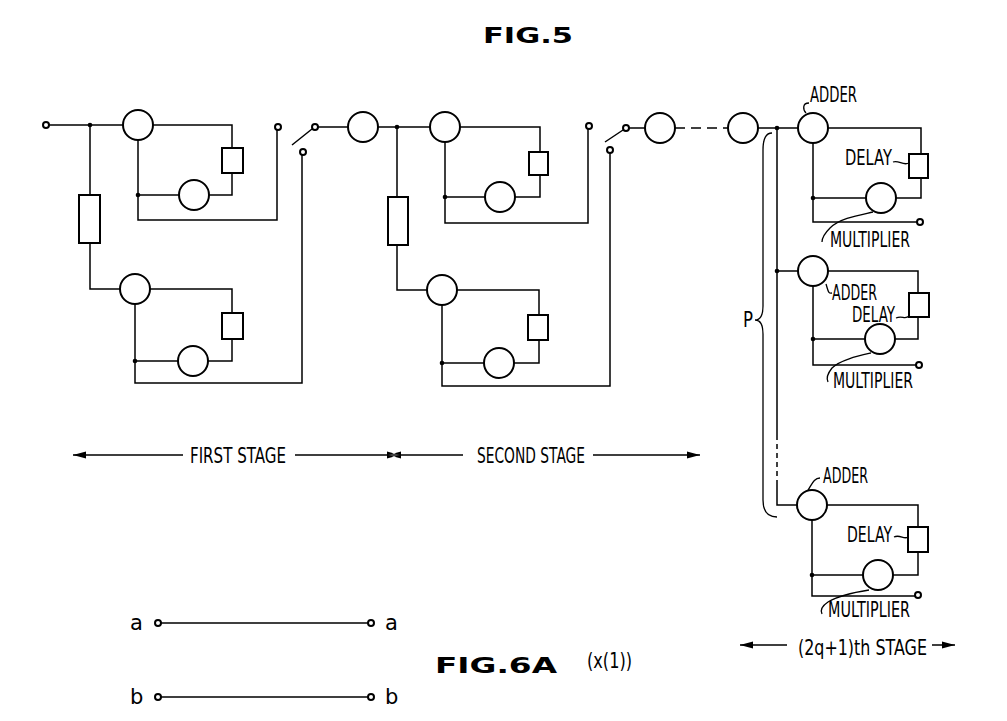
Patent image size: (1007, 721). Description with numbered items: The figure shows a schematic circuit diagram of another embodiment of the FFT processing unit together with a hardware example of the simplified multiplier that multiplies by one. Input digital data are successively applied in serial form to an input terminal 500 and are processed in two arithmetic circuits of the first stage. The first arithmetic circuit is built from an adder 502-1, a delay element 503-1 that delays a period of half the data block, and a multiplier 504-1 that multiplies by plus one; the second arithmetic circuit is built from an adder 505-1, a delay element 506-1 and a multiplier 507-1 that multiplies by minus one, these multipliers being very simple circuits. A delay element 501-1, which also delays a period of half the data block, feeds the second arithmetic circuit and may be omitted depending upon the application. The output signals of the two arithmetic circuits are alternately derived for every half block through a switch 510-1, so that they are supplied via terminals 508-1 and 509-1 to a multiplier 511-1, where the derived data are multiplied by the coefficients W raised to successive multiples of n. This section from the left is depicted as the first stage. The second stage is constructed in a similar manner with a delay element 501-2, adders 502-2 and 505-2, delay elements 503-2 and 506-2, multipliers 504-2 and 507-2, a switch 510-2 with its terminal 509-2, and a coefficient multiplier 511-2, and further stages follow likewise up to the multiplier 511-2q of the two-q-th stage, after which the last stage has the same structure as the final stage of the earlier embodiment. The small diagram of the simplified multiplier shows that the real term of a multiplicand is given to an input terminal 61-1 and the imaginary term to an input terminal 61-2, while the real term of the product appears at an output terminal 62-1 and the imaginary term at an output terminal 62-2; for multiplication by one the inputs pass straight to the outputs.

In FIG. 5, the input terminal 500 is at (46, 121).
In FIG. 5, the delay element 501-1 is at (100, 225).
In FIG. 5, the adder 502-1 is at (150, 97).
In FIG. 5, the delay element 503-1 is at (222, 160).
In FIG. 5, the multiplier 504-1 is at (192, 210).
In FIG. 5, the adder 505-1 is at (124, 297).
In FIG. 5, the delay element 506-1 is at (244, 323).
In FIG. 5, the multiplier 507-1 is at (191, 376).
In FIG. 5, the terminal 508-1 is at (286, 108).
In FIG. 5, the terminal 509-1 is at (303, 156).
In FIG. 5, the switch 510-1 is at (338, 108).
In FIG. 5, the multiplier 511-1 is at (360, 112).
In FIG. 5, the delay element 501-2 is at (388, 222).
In FIG. 5, the adder 502-2 is at (457, 116).
In FIG. 5, the delay element 503-2 is at (529, 164).
In FIG. 5, the multiplier 504-2 is at (498, 212).
In FIG. 5, the adder 505-2 is at (434, 302).
In FIG. 5, the delay element 506-2 is at (528, 328).
In FIG. 5, the multiplier 507-2 is at (497, 378).
In FIG. 5, the terminal 509-2 is at (610, 150).
In FIG. 5, the switch 510-2 is at (628, 124).
In FIG. 5, the multiplier 511-2 is at (654, 114).
In FIG. 5, the multiplier 511-2q is at (748, 143).
In FIG. 6A, the input terminal 61-1 is at (158, 619).
In FIG. 6A, the output terminal 62-1 is at (371, 619).
In FIG. 6A, the input terminal 61-2 is at (158, 693).
In FIG. 6A, the output terminal 62-2 is at (371, 693).